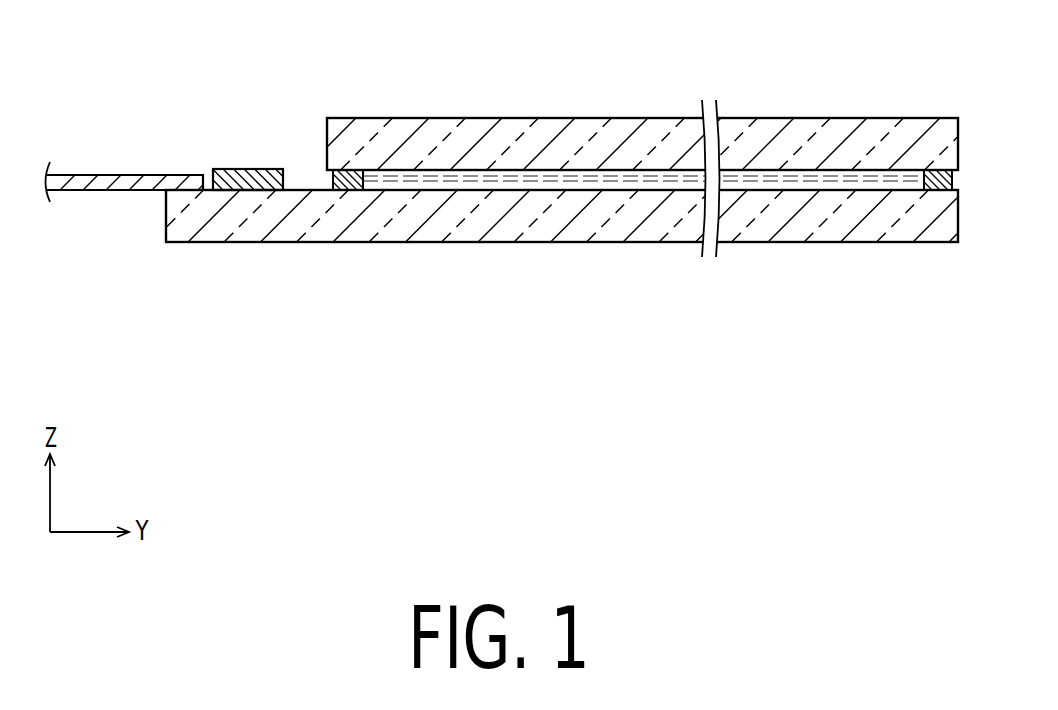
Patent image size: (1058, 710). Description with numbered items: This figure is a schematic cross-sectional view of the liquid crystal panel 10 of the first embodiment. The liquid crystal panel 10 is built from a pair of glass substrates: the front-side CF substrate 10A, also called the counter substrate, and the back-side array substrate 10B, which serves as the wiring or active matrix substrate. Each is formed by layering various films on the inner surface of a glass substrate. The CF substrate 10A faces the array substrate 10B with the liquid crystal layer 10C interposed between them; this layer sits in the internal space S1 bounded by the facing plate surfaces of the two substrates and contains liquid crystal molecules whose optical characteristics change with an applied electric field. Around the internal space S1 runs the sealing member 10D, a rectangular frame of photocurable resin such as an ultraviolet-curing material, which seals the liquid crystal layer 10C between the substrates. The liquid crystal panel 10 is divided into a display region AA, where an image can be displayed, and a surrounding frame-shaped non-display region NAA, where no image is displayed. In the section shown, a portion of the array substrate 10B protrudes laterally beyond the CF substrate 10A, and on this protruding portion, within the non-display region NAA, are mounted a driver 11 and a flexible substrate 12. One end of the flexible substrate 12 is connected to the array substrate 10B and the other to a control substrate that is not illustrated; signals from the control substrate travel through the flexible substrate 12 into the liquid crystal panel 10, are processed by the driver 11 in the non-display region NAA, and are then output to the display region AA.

The liquid crystal panel 10 is at (562, 183).
The CF substrate 10A is at (545, 130).
The array substrate 10B is at (460, 232).
The liquid crystal layer 10C is at (620, 180).
The sealing member 10D is at (347, 191).
The driver 11 is at (245, 168).
The flexible substrate 12 is at (108, 176).
The non-display region NAA is at (306, 167).
The display region AA is at (398, 101).
The internal space S1 is at (545, 193).